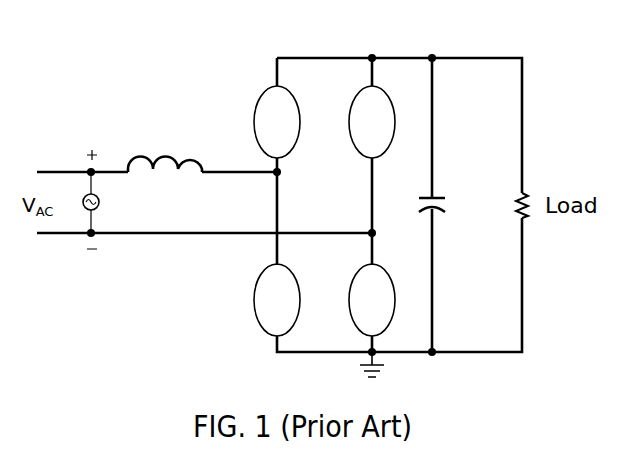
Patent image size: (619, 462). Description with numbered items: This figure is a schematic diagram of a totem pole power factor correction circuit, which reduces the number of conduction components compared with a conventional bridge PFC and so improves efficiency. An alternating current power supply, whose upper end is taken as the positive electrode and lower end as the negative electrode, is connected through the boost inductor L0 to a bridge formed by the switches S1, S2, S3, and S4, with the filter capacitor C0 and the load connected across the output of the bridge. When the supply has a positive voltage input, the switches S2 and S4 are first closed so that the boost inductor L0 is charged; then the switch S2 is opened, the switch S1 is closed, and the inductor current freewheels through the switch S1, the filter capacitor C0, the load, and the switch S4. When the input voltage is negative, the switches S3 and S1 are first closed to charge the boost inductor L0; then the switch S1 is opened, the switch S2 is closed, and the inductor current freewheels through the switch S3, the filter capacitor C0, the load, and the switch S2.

The boost inductor L0 is at (165, 148).
The switch S1 is at (277, 122).
The switch S2 is at (277, 300).
The switch S3 is at (372, 122).
The switch S4 is at (372, 300).
The filter capacitor C0 is at (424, 196).